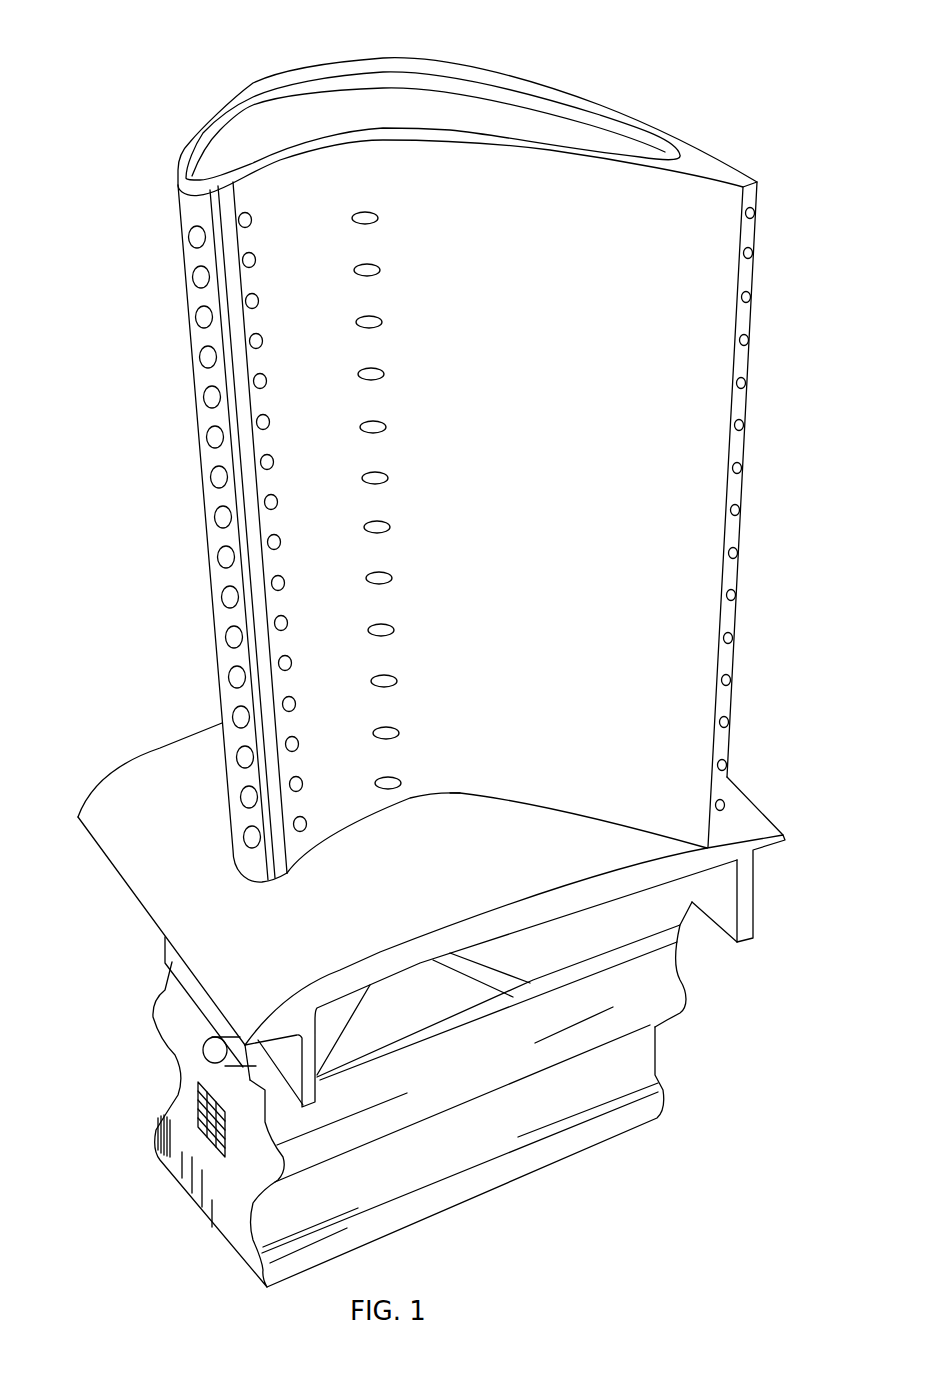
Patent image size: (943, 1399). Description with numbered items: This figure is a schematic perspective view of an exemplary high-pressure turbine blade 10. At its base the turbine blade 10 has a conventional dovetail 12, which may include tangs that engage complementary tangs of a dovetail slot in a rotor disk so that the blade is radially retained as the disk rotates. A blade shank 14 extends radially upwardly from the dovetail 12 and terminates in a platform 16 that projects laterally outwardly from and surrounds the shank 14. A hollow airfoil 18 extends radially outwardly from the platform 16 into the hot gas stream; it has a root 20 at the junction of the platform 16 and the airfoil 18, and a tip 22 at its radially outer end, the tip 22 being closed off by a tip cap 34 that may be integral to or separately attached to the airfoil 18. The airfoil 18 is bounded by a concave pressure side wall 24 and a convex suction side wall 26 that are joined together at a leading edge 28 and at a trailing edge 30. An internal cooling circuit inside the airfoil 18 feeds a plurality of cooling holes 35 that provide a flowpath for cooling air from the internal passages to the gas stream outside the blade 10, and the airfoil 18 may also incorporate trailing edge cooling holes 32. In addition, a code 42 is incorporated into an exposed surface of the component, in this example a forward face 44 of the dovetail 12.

The turbine blade 10 is at (160, 58).
The dovetail 12 is at (250, 1268).
The blade shank 14 is at (165, 960).
The platform 16 is at (130, 775).
The airfoil 18 is at (158, 291).
The root 20 is at (488, 796).
The tip 22 is at (405, 57).
The pressure side wall 24 is at (315, 545).
The suction side wall 26 is at (272, 391).
The leading edge 28 is at (212, 541).
The trailing edge 30 is at (730, 745).
The trailing edge cooling holes 32 is at (740, 420).
The tip cap 34 is at (512, 120).
The cooling holes 35 is at (385, 323).
The code 42 is at (212, 1149).
The forward face 44 is at (190, 1073).